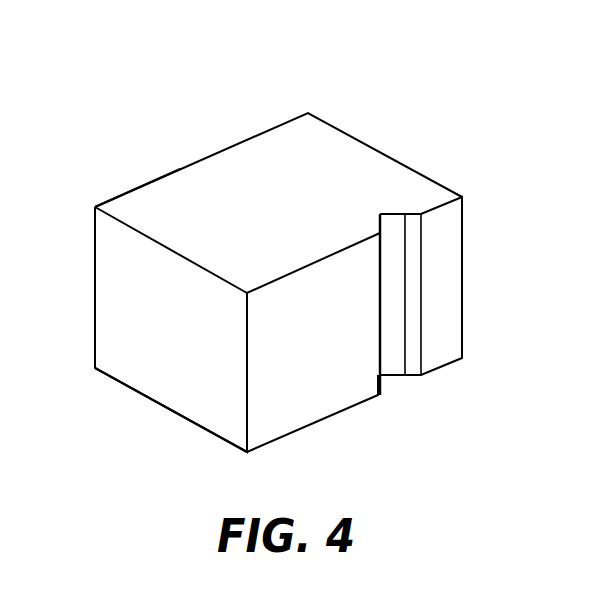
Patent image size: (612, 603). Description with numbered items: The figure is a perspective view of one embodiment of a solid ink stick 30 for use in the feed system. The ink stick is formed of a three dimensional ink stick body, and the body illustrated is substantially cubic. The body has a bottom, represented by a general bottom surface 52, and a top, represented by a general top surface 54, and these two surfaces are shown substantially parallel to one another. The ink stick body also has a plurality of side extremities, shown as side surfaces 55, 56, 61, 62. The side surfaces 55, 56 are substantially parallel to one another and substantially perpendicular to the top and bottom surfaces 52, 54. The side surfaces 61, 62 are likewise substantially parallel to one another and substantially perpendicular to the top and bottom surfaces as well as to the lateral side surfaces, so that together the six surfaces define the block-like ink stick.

The solid ink stick 30 is at (132, 76).
The top surface 54 is at (232, 160).
The side surface 55 is at (142, 183).
The side surface 61 is at (135, 348).
The bottom surface 52 is at (172, 410).
The side surface 56 is at (308, 403).
The side surface 62 is at (382, 152).